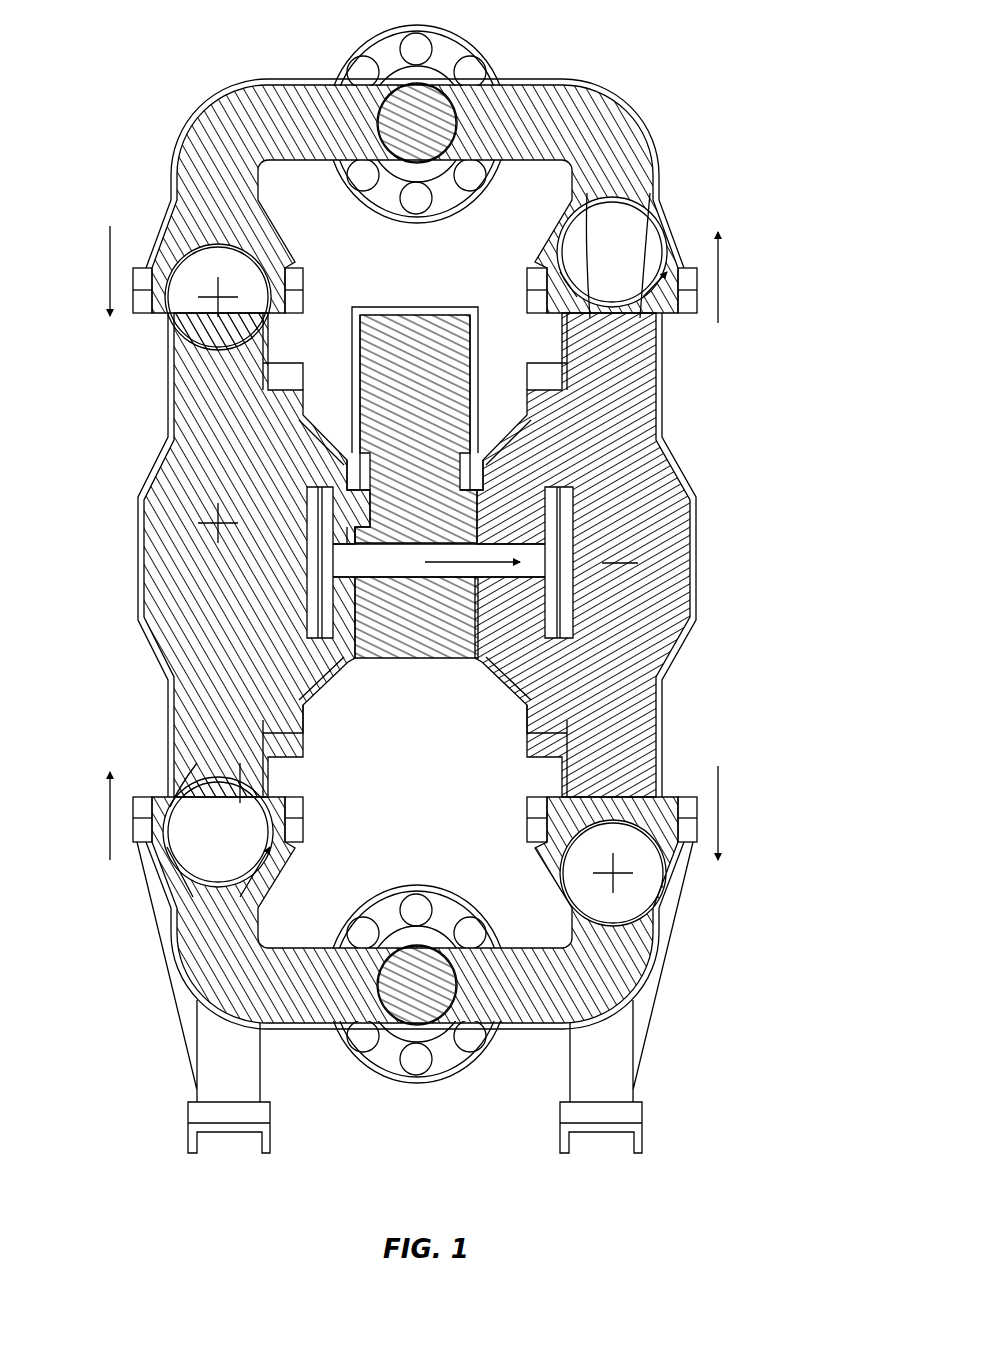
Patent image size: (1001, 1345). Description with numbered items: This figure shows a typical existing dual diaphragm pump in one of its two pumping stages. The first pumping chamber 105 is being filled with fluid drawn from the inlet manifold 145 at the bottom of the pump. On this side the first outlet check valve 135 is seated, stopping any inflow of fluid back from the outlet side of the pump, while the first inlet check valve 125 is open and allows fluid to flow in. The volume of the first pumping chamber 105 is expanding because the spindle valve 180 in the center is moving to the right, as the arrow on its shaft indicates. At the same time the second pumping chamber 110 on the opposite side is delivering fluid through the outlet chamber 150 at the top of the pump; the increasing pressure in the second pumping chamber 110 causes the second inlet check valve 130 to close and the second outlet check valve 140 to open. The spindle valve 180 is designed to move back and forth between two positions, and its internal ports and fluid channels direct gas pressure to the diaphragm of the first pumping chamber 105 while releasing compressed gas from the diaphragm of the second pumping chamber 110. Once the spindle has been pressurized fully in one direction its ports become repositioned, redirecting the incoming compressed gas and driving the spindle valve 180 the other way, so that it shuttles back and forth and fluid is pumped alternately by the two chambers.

The first pumping chamber 105 is at (160, 570).
The second pumping chamber 110 is at (668, 597).
The first inlet check valve 125 is at (198, 800).
The second inlet check valve 130 is at (635, 903).
The first outlet check valve 135 is at (192, 320).
The second outlet check valve 140 is at (618, 288).
The inlet manifold 145 is at (283, 1005).
The outlet chamber 150 is at (223, 118).
The spindle valve 180 is at (448, 556).